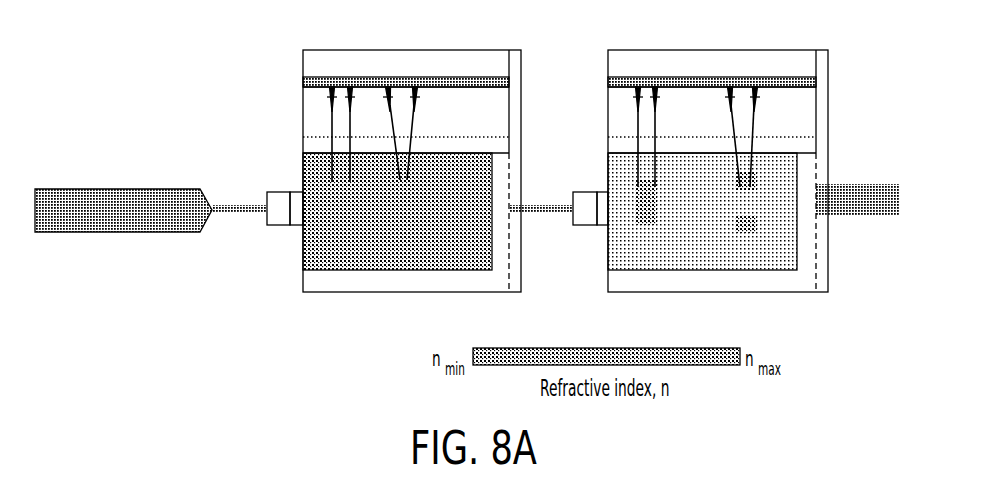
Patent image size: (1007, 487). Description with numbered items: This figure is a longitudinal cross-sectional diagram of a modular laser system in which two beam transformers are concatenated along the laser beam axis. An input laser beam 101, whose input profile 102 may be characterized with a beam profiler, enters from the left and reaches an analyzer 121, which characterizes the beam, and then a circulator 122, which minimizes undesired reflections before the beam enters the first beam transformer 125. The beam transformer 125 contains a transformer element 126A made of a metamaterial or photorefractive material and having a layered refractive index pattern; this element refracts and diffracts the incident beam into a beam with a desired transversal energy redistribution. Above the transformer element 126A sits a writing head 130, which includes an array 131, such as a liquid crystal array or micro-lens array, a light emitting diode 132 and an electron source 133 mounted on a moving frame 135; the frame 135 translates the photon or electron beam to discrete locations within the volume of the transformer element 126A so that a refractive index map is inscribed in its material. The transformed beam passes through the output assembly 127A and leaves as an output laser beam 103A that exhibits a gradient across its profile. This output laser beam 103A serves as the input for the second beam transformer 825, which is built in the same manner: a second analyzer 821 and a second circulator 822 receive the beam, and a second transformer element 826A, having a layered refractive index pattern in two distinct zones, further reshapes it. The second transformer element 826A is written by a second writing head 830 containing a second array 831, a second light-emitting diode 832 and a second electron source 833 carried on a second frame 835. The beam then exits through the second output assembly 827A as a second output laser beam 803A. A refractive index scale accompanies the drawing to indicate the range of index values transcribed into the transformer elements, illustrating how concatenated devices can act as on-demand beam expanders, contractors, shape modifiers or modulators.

The input laser beam 101 is at (108, 222).
The input profile 102 is at (240, 214).
The analyzer 121 is at (278, 198).
The circulator 122 is at (292, 193).
The beam transformer 125 is at (318, 293).
The transformer element 126A is at (330, 226).
The output assembly 127A is at (497, 255).
The writing head 130 is at (493, 97).
The array 131 is at (488, 137).
The light emitting diode 132 is at (350, 91).
The electron source 133 is at (415, 86).
The frame 135 is at (445, 76).
The output laser beam 103A is at (550, 220).
The second analyzer 821 is at (585, 200).
The second circulator 822 is at (600, 193).
The second beam transformer 825 is at (622, 293).
The second transformer element 826A is at (635, 228).
The second output assembly 827A is at (803, 255).
The second writing head 830 is at (800, 97).
The second array 831 is at (795, 137).
The second light-emitting diode 832 is at (655, 88).
The second electron source 833 is at (755, 87).
The second frame 835 is at (755, 76).
The output laser beam 803A is at (880, 218).